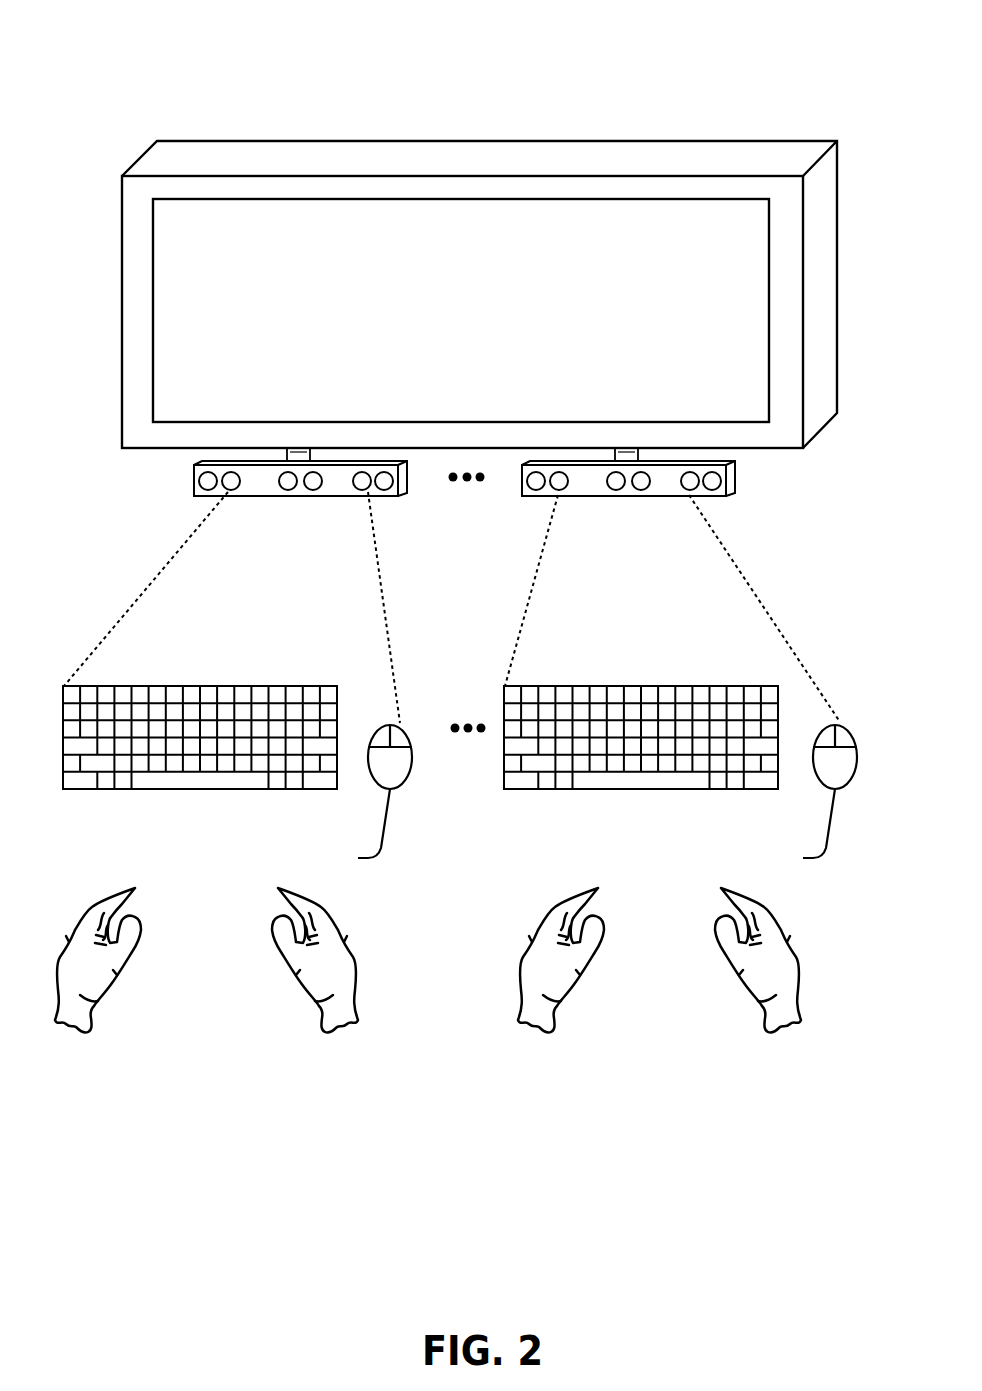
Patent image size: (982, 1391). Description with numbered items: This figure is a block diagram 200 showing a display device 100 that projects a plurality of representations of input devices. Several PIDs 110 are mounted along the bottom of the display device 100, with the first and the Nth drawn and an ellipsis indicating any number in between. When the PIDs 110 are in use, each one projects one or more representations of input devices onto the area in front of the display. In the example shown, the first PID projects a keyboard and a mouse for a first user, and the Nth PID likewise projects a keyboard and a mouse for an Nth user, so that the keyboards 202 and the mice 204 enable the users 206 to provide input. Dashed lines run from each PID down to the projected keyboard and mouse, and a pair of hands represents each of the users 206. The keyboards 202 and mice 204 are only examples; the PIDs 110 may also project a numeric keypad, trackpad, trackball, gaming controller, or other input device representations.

The block diagram 200 is at (117, 27).
The display device 100 is at (836, 140).
The PIDs 110 is at (464, 494).
The keyboards 202 is at (420, 760).
The mice 204 is at (527, 797).
The users 206 is at (428, 960).